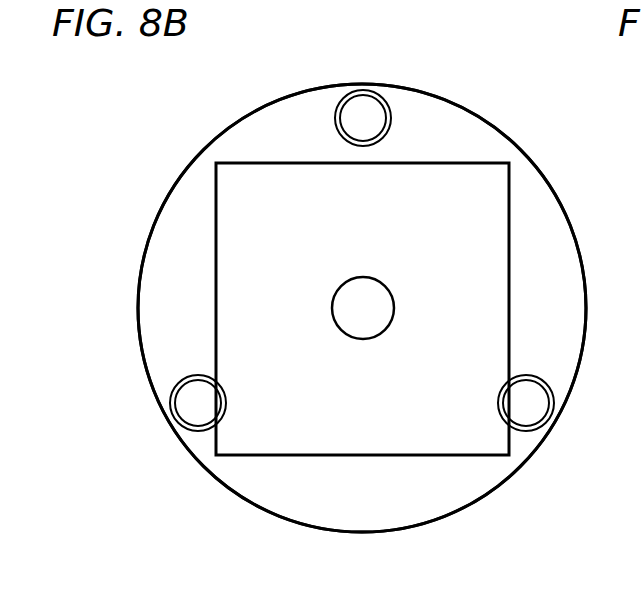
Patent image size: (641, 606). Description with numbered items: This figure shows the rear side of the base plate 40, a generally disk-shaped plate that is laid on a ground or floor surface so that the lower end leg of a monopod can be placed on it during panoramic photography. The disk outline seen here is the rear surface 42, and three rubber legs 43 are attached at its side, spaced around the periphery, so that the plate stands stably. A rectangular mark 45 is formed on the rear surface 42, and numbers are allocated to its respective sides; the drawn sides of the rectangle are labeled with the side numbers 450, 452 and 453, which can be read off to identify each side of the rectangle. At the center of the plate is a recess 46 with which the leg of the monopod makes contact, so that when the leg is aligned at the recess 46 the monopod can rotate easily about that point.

The base plate 40 is at (538, 167).
The rear surface 42 is at (555, 267).
The rubber legs 43 is at (359, 108).
The rectangular mark 45 is at (455, 162).
The side number of rectangular mark 450 is at (375, 190).
The side number of rectangular mark 452 is at (365, 443).
The side number of rectangular mark 453 is at (230, 313).
The recess 46 is at (340, 297).